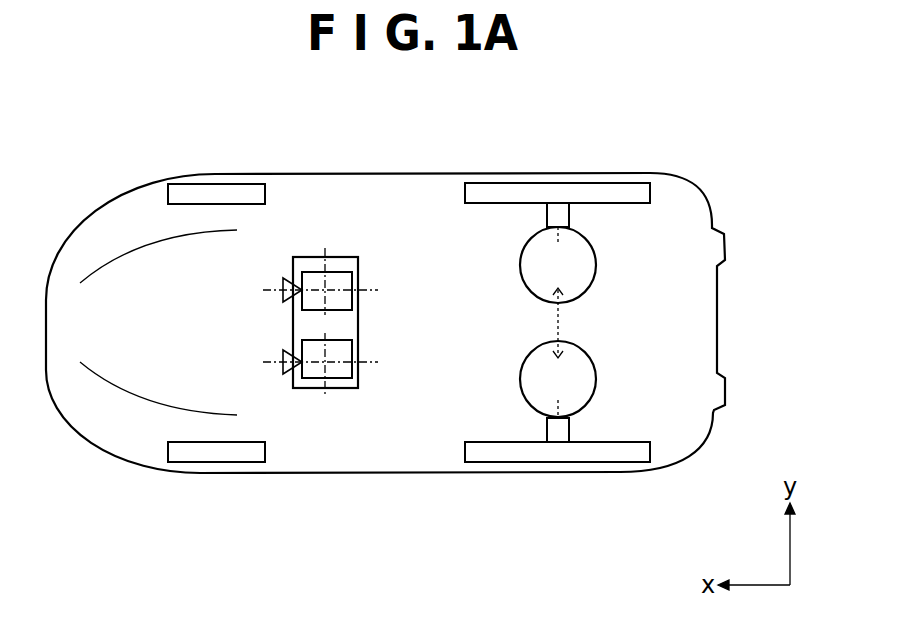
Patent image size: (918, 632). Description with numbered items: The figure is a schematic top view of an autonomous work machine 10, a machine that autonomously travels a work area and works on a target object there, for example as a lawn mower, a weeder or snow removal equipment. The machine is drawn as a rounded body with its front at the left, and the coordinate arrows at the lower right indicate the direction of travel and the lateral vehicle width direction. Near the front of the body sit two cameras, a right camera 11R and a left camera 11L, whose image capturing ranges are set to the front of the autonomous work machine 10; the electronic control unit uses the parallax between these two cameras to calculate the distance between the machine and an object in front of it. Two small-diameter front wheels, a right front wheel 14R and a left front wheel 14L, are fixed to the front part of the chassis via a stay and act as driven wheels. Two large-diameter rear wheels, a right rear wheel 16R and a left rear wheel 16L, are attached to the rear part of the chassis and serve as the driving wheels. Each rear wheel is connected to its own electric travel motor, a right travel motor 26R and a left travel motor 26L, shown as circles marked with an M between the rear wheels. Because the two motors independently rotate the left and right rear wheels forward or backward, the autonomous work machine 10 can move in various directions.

The autonomous work machine 10 is at (660, 417).
The right camera 11R is at (335, 280).
The left camera 11L is at (320, 372).
The right front wheel 14R is at (222, 184).
The left front wheel 14L is at (222, 462).
The right rear wheel 16R is at (570, 184).
The left rear wheel 16L is at (596, 462).
The right travel motor 26R is at (597, 262).
The left travel motor 26L is at (596, 383).